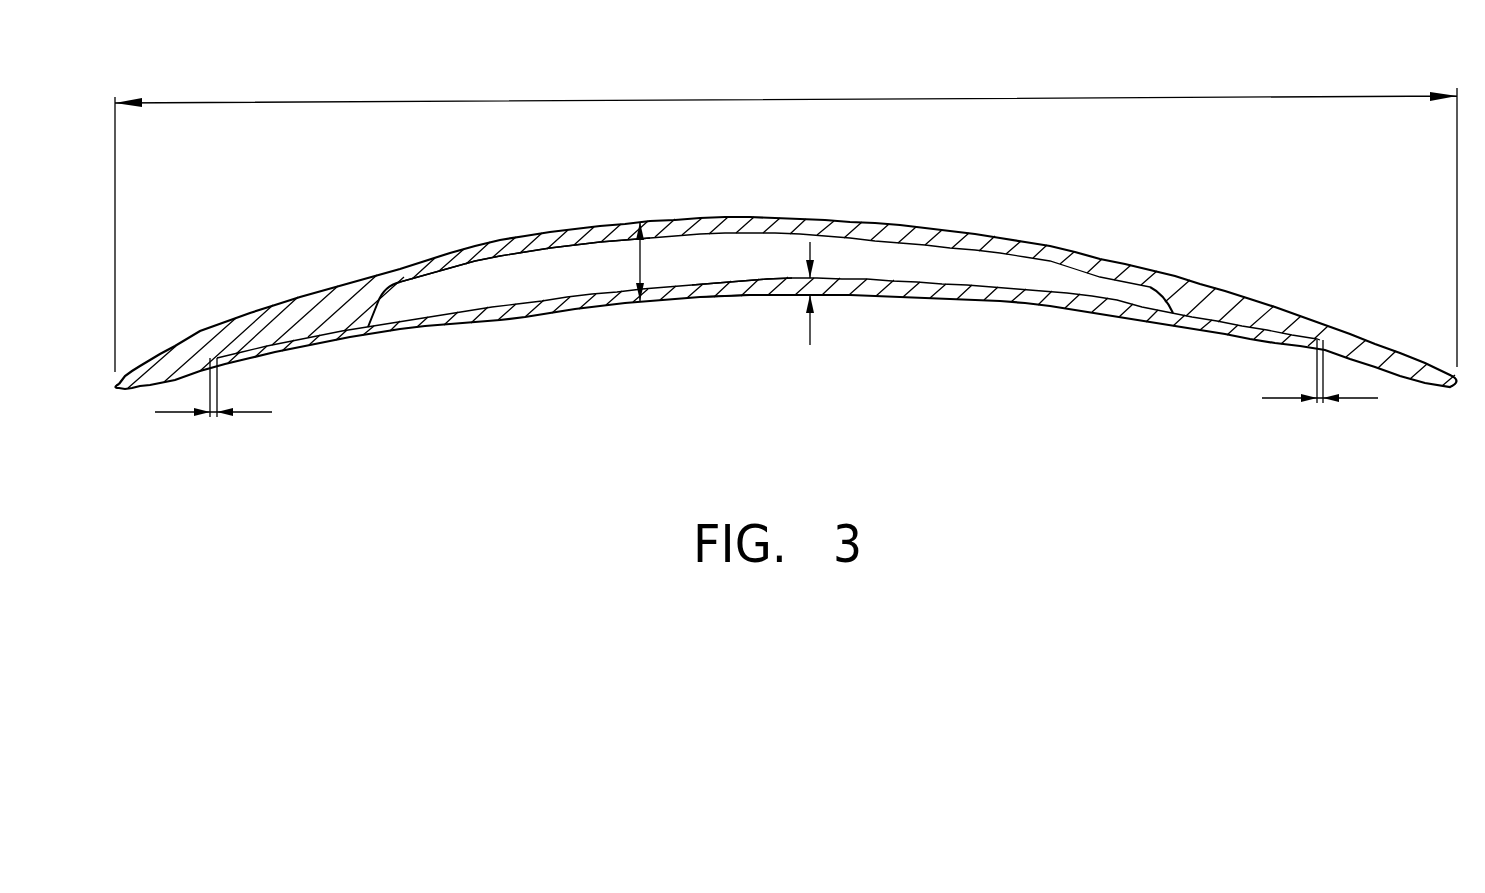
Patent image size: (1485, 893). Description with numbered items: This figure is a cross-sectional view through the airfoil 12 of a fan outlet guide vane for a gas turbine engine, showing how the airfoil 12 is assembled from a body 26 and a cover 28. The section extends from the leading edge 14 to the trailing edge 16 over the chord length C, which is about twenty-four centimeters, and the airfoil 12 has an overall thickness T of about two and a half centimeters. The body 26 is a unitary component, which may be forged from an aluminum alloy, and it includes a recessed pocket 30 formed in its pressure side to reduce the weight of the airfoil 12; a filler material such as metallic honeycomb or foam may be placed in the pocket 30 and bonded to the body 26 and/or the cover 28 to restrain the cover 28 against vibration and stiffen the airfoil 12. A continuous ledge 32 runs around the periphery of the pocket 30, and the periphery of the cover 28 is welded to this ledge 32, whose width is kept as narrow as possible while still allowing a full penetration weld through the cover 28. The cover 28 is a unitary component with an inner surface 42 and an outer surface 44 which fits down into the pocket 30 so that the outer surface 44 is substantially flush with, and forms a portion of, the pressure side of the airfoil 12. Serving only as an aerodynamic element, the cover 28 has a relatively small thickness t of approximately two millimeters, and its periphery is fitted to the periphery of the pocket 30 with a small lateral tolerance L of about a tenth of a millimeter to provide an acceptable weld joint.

The airfoil 12 is at (1241, 190).
The leading edge 14 is at (112, 389).
The trailing edge 16 is at (1463, 387).
The body 26 is at (993, 245).
The cover 28 is at (950, 291).
The recessed pocket 30 is at (556, 274).
The ledge 32 is at (290, 335).
The inner surface 42 is at (748, 280).
The outer surface 44 is at (733, 298).
The chord length C is at (785, 101).
The overall thickness T is at (640, 273).
The cover thickness t is at (810, 335).
The lateral tolerance L is at (257, 413).